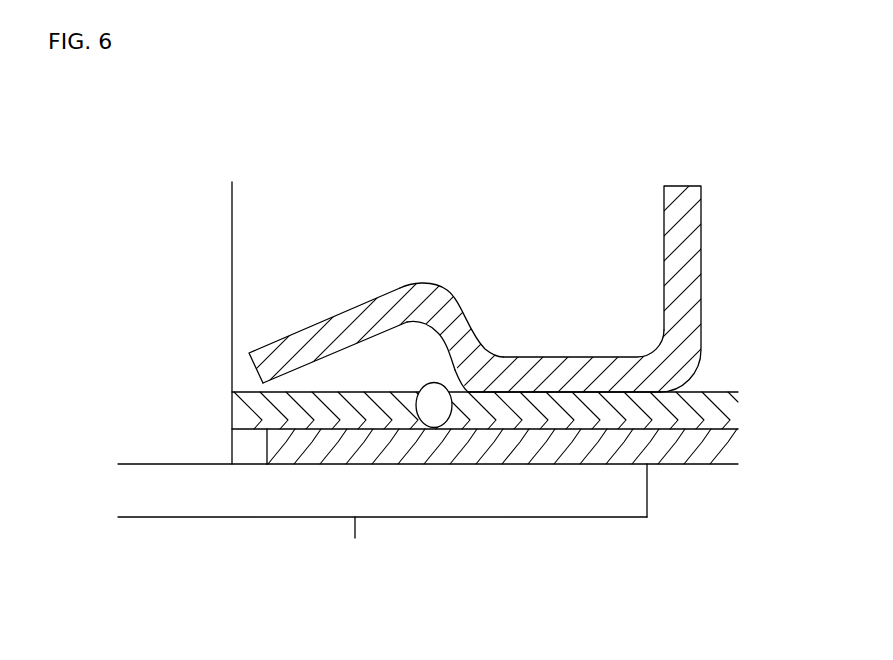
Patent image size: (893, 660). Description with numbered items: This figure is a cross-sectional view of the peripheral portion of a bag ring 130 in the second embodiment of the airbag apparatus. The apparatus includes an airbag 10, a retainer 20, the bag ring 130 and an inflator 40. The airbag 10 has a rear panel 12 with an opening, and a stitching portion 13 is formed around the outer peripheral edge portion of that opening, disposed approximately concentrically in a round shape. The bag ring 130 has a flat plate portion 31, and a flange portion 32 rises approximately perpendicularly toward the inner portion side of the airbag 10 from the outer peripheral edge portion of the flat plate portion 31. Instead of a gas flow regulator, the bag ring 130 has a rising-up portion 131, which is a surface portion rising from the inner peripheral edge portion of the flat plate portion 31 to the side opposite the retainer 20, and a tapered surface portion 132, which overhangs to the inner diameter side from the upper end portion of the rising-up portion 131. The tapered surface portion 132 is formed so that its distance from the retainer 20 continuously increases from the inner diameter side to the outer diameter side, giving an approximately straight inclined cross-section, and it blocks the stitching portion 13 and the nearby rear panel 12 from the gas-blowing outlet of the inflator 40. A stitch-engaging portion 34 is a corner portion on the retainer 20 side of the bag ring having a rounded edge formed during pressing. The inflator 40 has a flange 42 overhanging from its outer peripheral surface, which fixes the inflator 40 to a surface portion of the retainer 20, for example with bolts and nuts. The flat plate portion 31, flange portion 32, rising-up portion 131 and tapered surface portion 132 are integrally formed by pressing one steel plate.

The airbag 10 is at (542, 366).
The rear panel 12 is at (730, 391).
The stitching portion 13 is at (437, 422).
The retainer 20 is at (730, 460).
The flat plate portion 31 is at (555, 357).
The flange portion 32 is at (698, 230).
The stitch-engaging portion 34 is at (468, 382).
The inflator 40 is at (233, 202).
The flange 42 is at (630, 517).
The bag ring 130 is at (403, 327).
The rising-up portion 131 is at (478, 364).
The tapered surface portion 132 is at (329, 319).